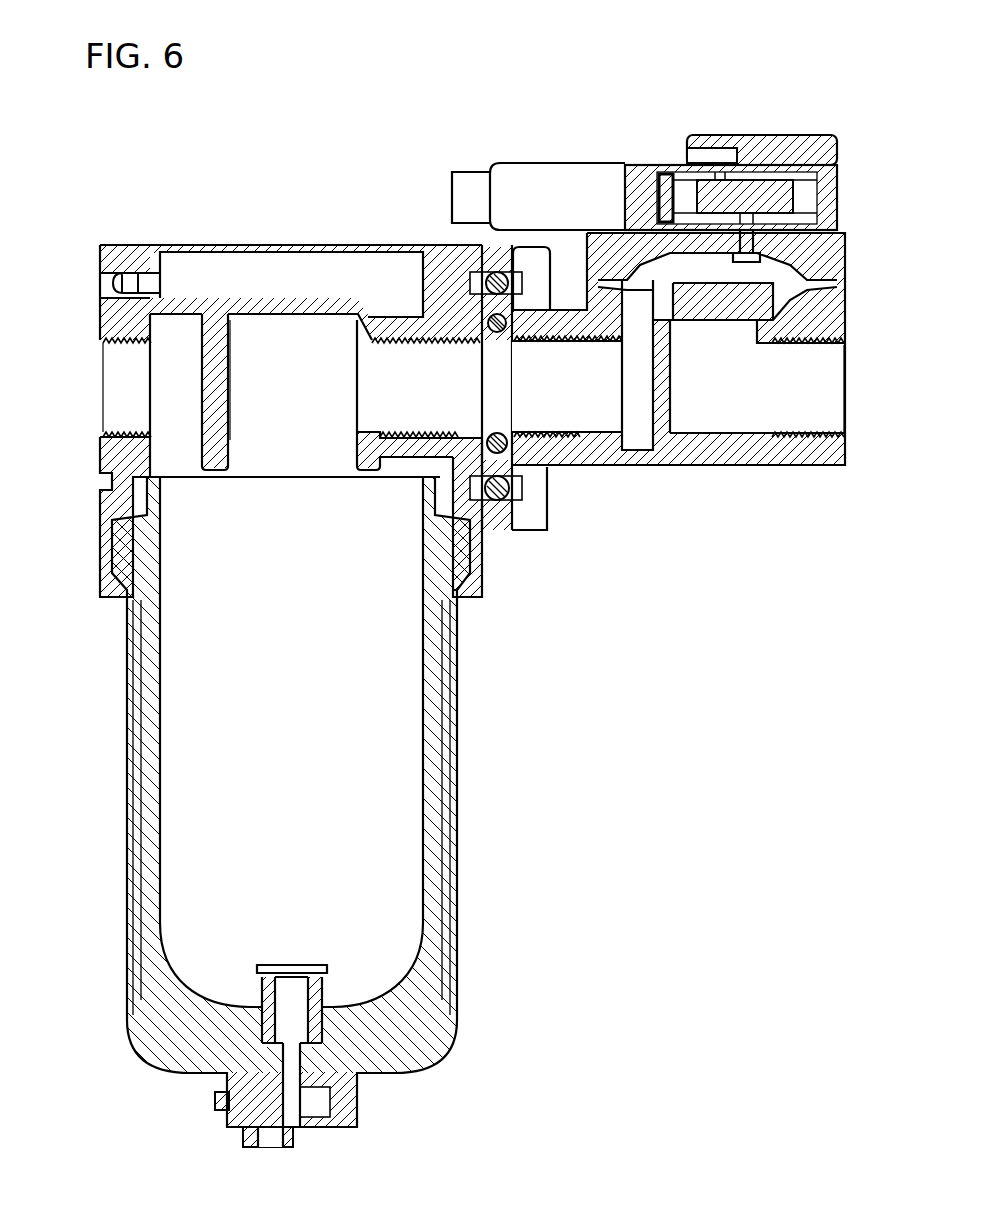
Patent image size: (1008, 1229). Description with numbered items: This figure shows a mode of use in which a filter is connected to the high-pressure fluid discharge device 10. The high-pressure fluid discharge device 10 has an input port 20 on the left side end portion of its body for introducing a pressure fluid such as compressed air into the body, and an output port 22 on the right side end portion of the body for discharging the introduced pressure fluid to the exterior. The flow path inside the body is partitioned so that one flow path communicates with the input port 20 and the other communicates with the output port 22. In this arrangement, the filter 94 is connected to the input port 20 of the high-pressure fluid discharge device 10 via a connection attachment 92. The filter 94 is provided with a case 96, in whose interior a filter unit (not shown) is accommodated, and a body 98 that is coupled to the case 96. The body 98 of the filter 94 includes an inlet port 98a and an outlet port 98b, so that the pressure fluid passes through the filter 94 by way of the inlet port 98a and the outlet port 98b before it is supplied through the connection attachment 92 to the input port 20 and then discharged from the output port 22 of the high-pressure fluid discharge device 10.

The high-pressure fluid discharge device 10 is at (851, 150).
The input port 20 is at (568, 410).
The output port 22 is at (800, 410).
The connection attachment 92 is at (498, 517).
The filter 94 is at (86, 617).
The case 96 is at (145, 730).
The body 98 is at (118, 449).
The inlet port 98a is at (120, 362).
The outlet port 98b is at (430, 400).